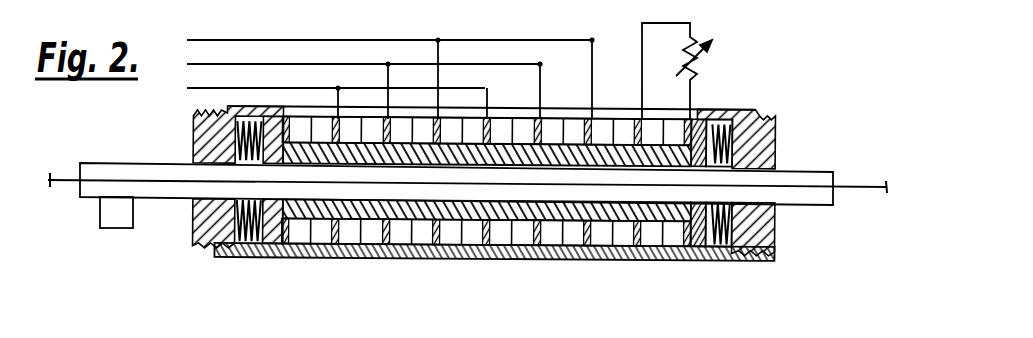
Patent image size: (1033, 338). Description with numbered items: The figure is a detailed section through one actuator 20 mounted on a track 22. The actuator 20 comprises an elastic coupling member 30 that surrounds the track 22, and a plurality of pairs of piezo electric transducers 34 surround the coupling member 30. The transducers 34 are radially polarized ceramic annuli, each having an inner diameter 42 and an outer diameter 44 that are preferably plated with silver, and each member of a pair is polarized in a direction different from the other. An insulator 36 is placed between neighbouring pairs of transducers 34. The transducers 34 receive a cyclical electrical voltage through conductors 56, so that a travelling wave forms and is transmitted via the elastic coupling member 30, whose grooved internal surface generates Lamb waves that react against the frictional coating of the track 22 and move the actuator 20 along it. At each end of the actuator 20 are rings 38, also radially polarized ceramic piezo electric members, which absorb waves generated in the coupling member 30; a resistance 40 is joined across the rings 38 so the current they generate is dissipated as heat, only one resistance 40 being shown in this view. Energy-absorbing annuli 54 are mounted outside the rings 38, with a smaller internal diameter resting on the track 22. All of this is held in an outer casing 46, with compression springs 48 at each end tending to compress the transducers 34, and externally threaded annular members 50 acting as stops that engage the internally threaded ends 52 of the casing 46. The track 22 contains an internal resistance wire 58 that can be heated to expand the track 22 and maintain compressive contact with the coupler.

The actuator 20 is at (513, 265).
The track 22 is at (813, 172).
The elastic coupling member 30 is at (418, 258).
The piezo electric transducers 34 is at (527, 92).
The insulator 36 is at (577, 247).
The rings 38 is at (315, 258).
The resistance 40 is at (705, 57).
The inner diameter 42 is at (455, 258).
The outer diameter 44 is at (610, 258).
The outer casing 46 is at (370, 258).
The compression springs 48 is at (193, 140).
The annular members 50 is at (192, 221).
The internally threaded ends 52 is at (240, 255).
The annuli 54 is at (265, 258).
The conductors 56 is at (268, 88).
The internal resistance wire 58 is at (57, 152).